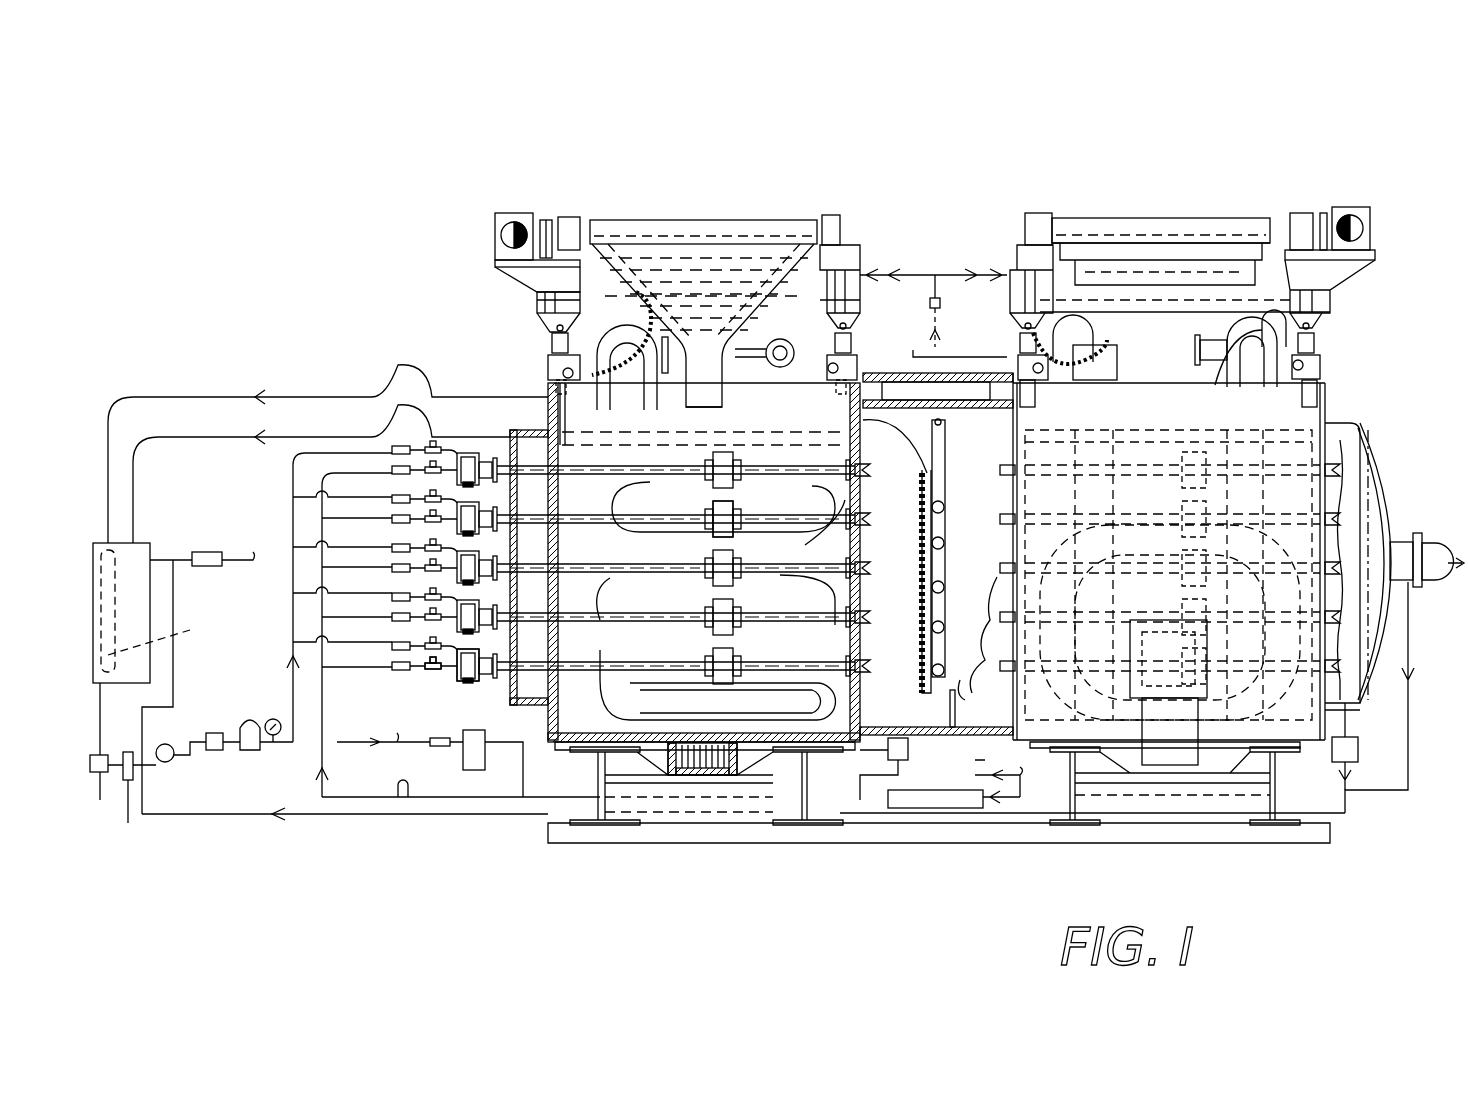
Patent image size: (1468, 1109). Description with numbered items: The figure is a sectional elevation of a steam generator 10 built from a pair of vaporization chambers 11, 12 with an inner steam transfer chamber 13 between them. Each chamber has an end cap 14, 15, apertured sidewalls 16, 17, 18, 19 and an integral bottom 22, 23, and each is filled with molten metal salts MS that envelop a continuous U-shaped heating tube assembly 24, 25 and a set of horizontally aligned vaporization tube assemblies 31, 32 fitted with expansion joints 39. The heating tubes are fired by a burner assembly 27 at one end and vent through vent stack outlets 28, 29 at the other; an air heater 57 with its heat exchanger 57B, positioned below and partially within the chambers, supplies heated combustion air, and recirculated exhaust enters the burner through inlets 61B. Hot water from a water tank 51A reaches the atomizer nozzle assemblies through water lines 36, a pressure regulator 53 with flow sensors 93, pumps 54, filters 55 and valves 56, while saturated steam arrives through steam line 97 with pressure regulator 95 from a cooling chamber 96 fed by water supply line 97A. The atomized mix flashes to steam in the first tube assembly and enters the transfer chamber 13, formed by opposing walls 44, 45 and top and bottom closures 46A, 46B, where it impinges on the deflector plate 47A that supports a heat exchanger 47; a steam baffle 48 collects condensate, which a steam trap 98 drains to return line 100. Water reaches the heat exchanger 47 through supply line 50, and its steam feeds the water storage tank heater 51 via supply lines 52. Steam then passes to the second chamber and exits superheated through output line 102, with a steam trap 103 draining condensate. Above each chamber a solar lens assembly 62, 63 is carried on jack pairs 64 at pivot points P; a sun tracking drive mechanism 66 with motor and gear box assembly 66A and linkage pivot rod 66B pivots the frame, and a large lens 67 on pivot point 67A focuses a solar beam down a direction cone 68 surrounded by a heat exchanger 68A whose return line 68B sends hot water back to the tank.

The steam generator 10 is at (423, 258).
The vaporization chamber 11 is at (704, 562).
The vaporization chamber 12 is at (1169, 561).
The steam transfer chamber 13 is at (1003, 505).
The end cap 14 is at (497, 440).
The end cap 15 is at (1355, 433).
The apertured sidewall 16 is at (560, 447).
The apertured sidewall 17 is at (795, 480).
The apertured sidewall 18 is at (1010, 533).
The apertured sidewall 19 is at (1325, 490).
The integral bottom 22 is at (570, 745).
The integral bottom 23 is at (1015, 742).
The heating tube assembly 24 is at (812, 540).
The heating tube assembly 25 is at (1010, 583).
The burner assembly 27 is at (1115, 345).
The vent stack outlet 28 is at (550, 342).
The vent stack outlet 29 is at (1305, 342).
The vaporization tube assembly 31 is at (652, 480).
The vaporization tube assembly 32 is at (470, 690).
The water lines 36 is at (293, 675).
The expansion joints 39 is at (740, 487).
The wall 44 is at (984, 556).
The wall 45 is at (962, 690).
The top closure 46A is at (972, 410).
The bottom closure 46B is at (908, 727).
The heat exchanger 47 is at (940, 617).
The deflector plate 47A is at (920, 592).
The steam baffle 48 is at (950, 735).
The supply line 50 is at (935, 275).
The water storage tank heater 51 is at (154, 611).
The water tank 51A is at (150, 545).
The supply lines 52 is at (200, 397).
The pressure regulator 53 is at (250, 750).
The pump 54 is at (172, 745).
The filter 55 is at (132, 798).
The valve 56 is at (395, 674).
The air heater 57 is at (1185, 722).
The heat exchanger 57B is at (1205, 680).
The inlet 61B is at (755, 352).
The solar lens assembly 62 is at (797, 214).
The solar lens assembly 63 is at (1242, 208).
The jack pair 64 is at (548, 372).
The sun tracking controller and drive mechanism 66 is at (1382, 248).
The motor and gear box assembly 66A is at (1362, 230).
The linkage pivot rod 66B is at (1023, 230).
The lens 67 is at (652, 235).
The pivot point 67A is at (855, 232).
The direction cone 68 is at (760, 330).
The heat exchanger 68A is at (712, 255).
The return line 68B is at (647, 395).
The flow sensor 93 is at (435, 672).
The pressure regulator 95 is at (410, 783).
The cooling chamber 96 is at (965, 808).
The steam line 97 is at (1395, 800).
The water supply line 97A is at (1020, 800).
The steam trap 98 is at (888, 750).
The return line 100 is at (500, 815).
The output line 102 is at (1440, 548).
The steam trap 103 is at (1352, 750).
The pivot points P is at (555, 330).
The molten metal salts MS is at (1392, 388).